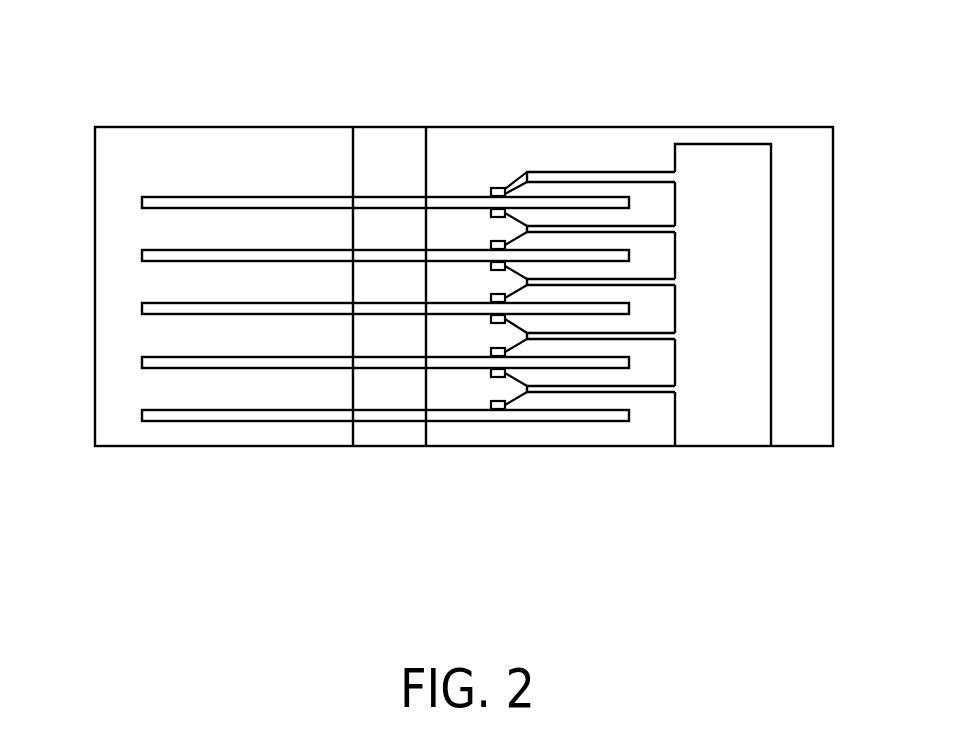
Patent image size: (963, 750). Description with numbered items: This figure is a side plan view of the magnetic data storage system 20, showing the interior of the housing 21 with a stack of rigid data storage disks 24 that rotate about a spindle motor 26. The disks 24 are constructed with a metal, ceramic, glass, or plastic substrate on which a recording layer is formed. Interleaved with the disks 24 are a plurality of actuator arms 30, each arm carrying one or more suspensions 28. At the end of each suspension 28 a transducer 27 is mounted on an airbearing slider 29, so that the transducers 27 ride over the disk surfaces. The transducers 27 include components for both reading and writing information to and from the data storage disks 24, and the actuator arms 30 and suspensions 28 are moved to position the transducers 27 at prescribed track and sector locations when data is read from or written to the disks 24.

The magnetic data storage system 20 is at (458, 264).
The housing 21 is at (833, 328).
The rigid data storage disks 24 is at (142, 199).
The spindle motor 26 is at (382, 437).
The transducers 27 is at (480, 204).
The suspensions 28 is at (513, 181).
The airbearing sliders 29 is at (490, 187).
The actuator arms 30 is at (580, 171).